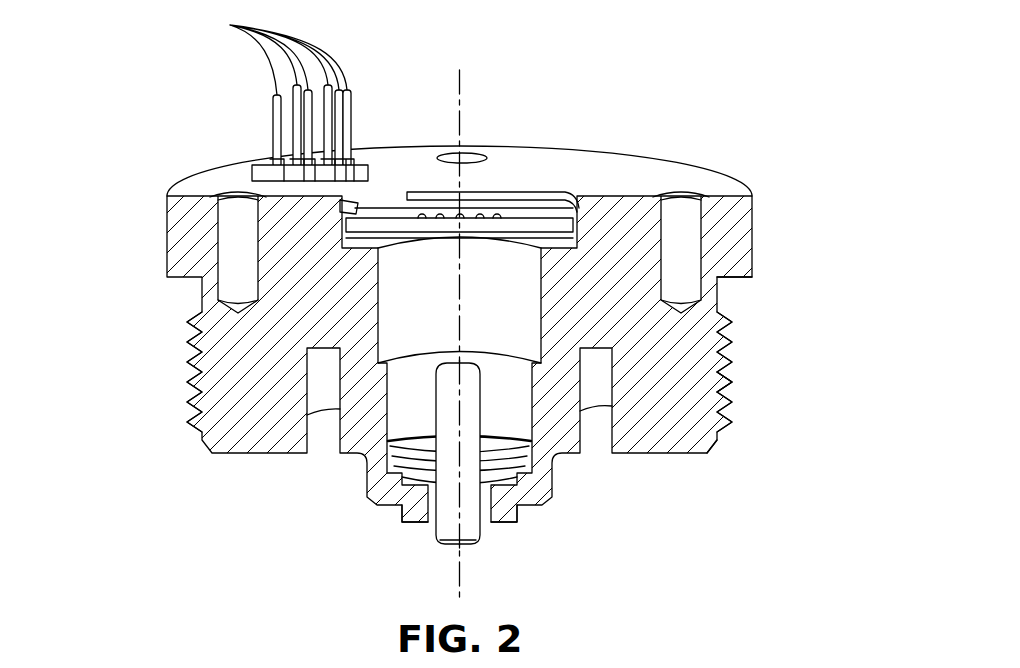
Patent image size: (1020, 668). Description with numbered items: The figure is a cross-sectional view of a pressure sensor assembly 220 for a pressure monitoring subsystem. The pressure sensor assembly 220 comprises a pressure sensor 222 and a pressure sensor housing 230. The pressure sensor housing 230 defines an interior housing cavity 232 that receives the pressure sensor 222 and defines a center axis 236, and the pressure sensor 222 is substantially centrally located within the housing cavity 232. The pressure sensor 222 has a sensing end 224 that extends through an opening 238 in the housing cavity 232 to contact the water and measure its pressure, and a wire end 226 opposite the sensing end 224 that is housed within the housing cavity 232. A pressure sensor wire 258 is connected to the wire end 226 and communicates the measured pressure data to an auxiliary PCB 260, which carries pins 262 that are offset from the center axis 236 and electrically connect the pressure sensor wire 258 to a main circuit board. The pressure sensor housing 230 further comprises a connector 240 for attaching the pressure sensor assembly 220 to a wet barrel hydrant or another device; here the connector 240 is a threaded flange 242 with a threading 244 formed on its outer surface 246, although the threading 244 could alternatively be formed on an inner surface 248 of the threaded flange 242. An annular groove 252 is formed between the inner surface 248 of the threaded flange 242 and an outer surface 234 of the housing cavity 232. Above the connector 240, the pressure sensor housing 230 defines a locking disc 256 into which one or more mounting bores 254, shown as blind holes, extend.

The pressure sensor assembly 220 is at (733, 117).
The pressure sensor 222 is at (428, 506).
The sensing end 224 is at (449, 503).
The wire end 226 is at (452, 262).
The pressure sensor housing 230 is at (333, 424).
The housing cavity 232 is at (412, 410).
The outer surface of the housing cavity 234 is at (308, 450).
The center axis 236 is at (462, 100).
The opening 238 is at (485, 522).
The connector 240 is at (768, 366).
The threaded flange 242 is at (698, 432).
The threading 244 is at (733, 388).
The outer surface of the threaded flange 246 is at (717, 292).
The inner surface of the threaded flange 248 is at (597, 395).
The annular groove 252 is at (328, 380).
The mounting bores 254 is at (238, 226).
The locking disc 256 is at (632, 177).
The pressure sensor wire 258 is at (452, 262).
The auxiliary PCB 260 is at (404, 212).
The pins 262 is at (261, 89).